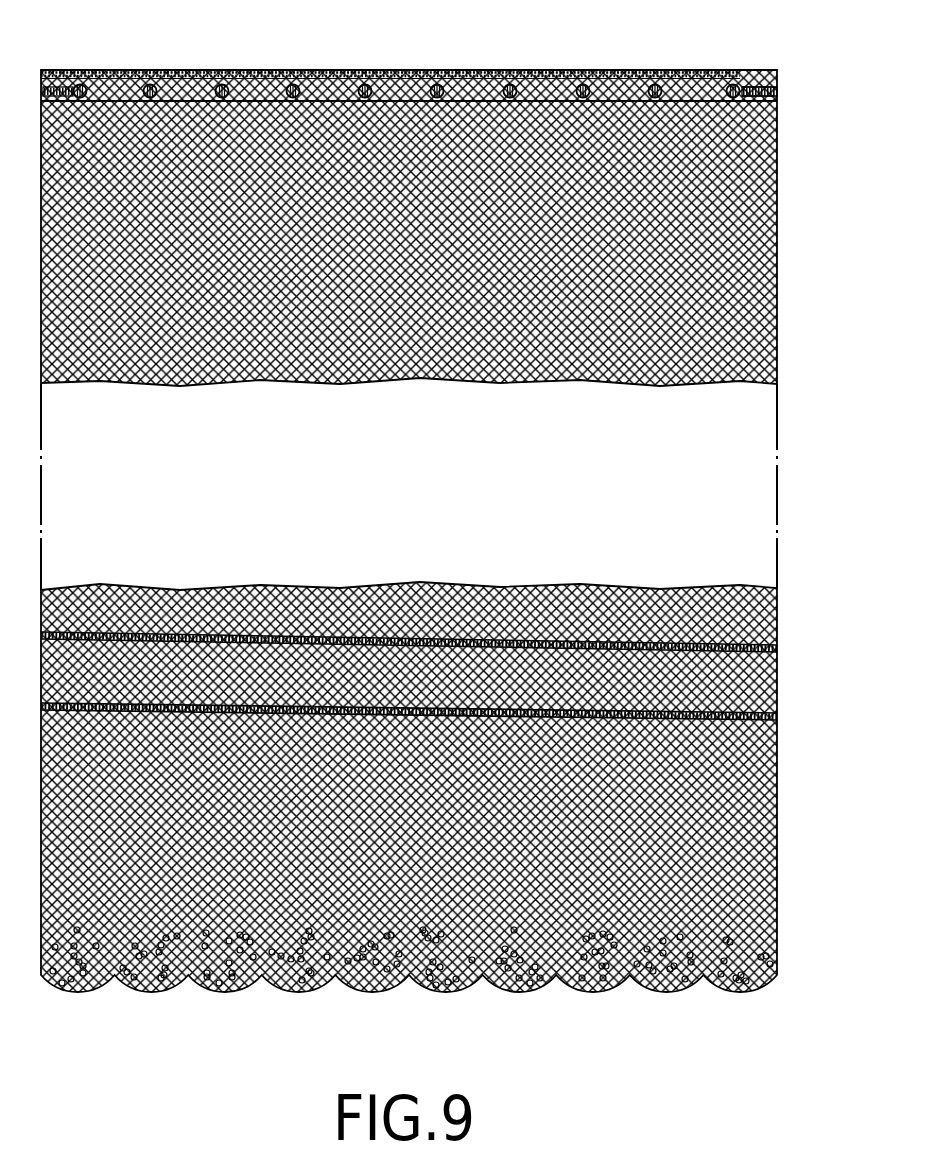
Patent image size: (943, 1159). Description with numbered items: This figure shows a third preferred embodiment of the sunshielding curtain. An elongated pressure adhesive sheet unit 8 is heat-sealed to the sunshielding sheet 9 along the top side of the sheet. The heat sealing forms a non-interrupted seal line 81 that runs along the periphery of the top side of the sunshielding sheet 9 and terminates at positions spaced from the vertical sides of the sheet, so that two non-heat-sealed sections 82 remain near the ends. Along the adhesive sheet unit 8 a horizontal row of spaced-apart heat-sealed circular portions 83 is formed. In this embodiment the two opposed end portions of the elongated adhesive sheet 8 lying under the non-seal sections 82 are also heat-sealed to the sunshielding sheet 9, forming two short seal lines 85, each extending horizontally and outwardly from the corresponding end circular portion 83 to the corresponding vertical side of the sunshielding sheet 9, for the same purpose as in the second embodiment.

The pressure adhesive sheet unit 8 is at (750, 682).
The sunshielding sheet 9 is at (750, 263).
The seal line 81 is at (493, 76).
The non-heat-sealed section 82 is at (57, 71).
The heat-sealed circular portion 83 is at (222, 85).
The short seal line 85 is at (778, 90).